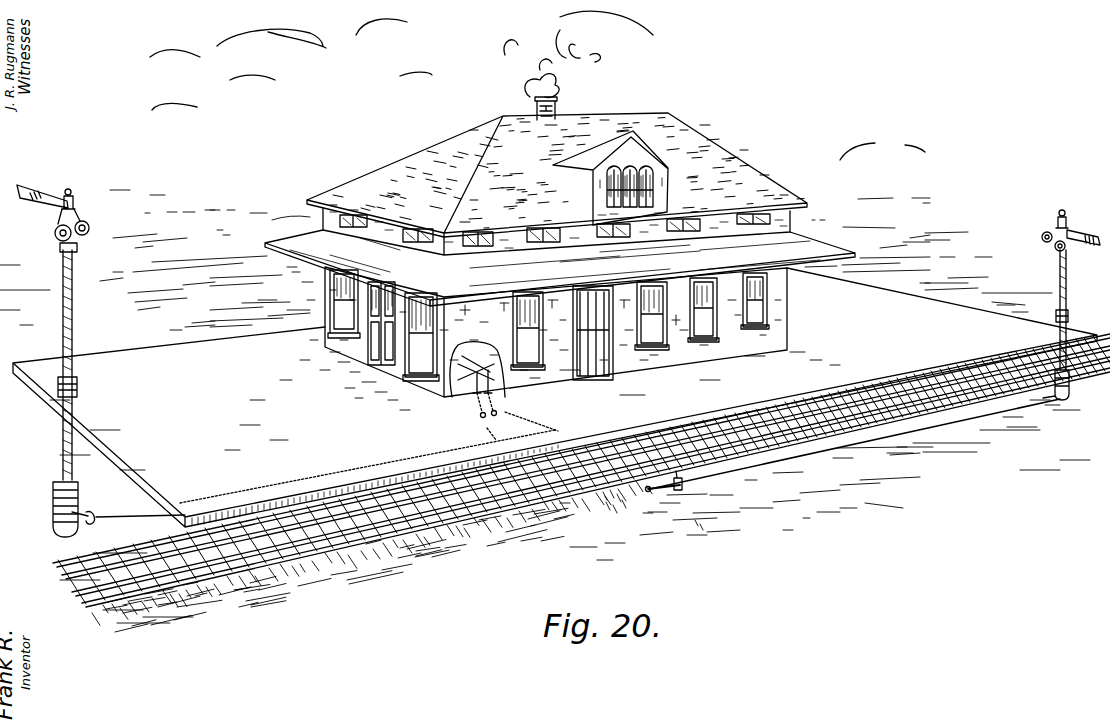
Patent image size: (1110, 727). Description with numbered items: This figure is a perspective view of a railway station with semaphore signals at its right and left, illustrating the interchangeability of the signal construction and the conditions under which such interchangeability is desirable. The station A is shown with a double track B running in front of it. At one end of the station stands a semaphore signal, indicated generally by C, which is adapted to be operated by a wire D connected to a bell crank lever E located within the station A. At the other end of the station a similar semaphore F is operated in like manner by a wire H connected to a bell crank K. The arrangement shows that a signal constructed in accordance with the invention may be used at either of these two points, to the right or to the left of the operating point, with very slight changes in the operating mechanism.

The station A is at (422, 372).
The double track B is at (521, 507).
The semaphore signal C is at (73, 337).
The wire D is at (128, 508).
The bell crank lever E is at (455, 400).
The semaphore F is at (1058, 267).
The wire H is at (815, 452).
The bell crank K is at (503, 398).